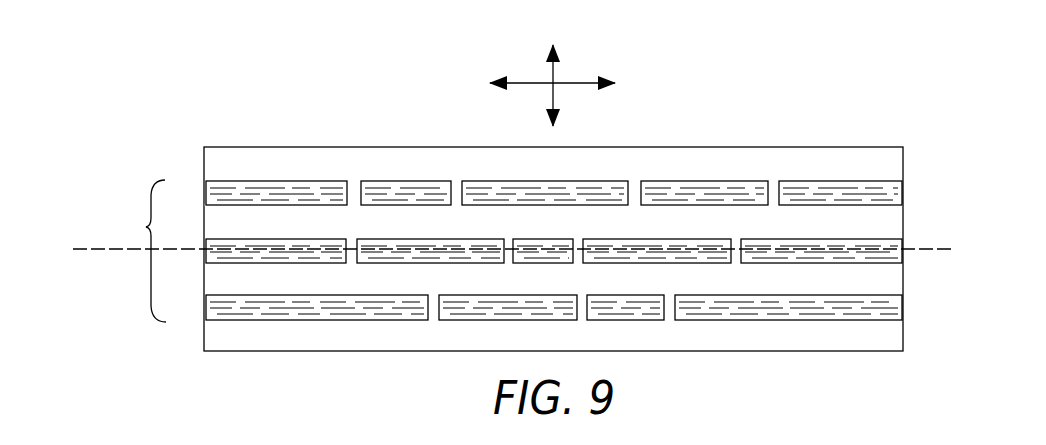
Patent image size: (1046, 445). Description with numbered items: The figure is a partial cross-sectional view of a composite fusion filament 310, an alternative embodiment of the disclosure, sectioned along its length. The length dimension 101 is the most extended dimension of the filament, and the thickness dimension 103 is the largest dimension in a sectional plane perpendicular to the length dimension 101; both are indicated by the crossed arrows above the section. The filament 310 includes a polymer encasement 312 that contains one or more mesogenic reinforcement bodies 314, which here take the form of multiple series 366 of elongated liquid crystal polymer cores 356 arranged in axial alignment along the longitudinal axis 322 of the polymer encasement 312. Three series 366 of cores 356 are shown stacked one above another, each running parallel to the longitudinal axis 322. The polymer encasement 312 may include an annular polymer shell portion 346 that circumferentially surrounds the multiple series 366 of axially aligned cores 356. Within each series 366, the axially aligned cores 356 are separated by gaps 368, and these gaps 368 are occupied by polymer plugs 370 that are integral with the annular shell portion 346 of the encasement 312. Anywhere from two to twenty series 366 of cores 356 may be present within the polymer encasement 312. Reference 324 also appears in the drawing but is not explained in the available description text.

The length dimension 101 is at (578, 83).
The thickness dimension 103 is at (555, 97).
The composite fusion filament 310 is at (120, 198).
The polymer encasement 312 is at (236, 150).
The mesogenic reinforcement bodies 314 is at (135, 251).
The longitudinal axis 322 is at (917, 248).
The first layer 324 is at (250, 188).
The annular polymer shell portion 346 is at (281, 155).
The elongated liquid crystal polymer cores 356 is at (270, 185).
The series 366 is at (200, 204).
The gaps 368 is at (353, 192).
The polymer plugs 370 is at (353, 188).